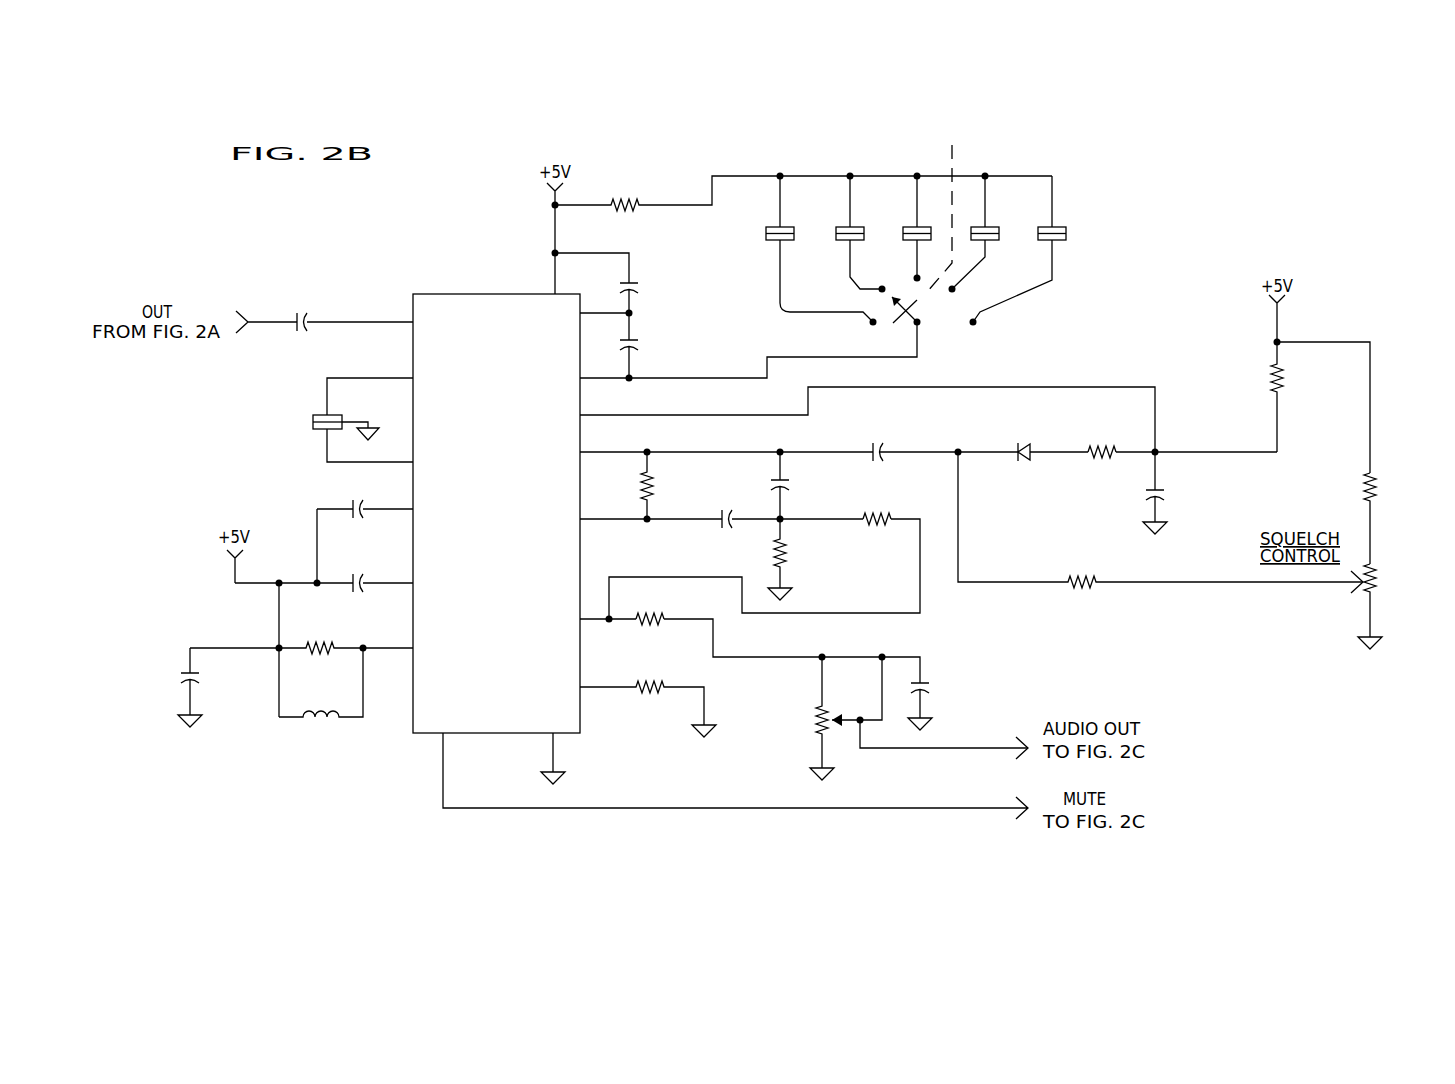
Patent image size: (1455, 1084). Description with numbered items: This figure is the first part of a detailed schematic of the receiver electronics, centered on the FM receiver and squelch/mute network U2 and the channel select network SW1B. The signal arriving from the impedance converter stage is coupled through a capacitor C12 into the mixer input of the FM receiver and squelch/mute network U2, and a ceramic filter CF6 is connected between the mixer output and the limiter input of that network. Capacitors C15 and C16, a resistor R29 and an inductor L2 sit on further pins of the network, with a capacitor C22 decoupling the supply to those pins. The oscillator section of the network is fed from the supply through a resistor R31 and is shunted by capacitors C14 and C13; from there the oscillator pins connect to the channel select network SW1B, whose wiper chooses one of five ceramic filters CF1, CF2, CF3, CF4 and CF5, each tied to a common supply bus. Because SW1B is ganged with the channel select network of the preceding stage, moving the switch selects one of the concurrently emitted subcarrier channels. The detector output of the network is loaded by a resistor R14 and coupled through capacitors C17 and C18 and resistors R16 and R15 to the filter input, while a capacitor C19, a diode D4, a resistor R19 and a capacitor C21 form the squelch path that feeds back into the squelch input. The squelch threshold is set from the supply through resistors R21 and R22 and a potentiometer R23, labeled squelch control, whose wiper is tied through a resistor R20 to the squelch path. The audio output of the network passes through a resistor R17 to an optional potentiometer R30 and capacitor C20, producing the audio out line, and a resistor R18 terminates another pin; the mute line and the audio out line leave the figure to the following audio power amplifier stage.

The FM receiver and squelch/mute network U2 is at (496, 515).
The 0.1 uF coupling capacitor C12 is at (351, 322).
The TOKO HCFM2-455B ceramic filter CF6 is at (301, 420).
The 0.1 uF capacitor C15 is at (365, 507).
The 0.1 uF capacitor C16 is at (324, 581).
The 20K resistor R29 is at (301, 649).
The TOKO 7MC-8128Z inductor L2 is at (323, 704).
The 0.1 uF capacitor C22 is at (208, 687).
The 220 ohm resistor R31 is at (803, 205).
The 0.001 uF capacitor C14 is at (622, 283).
The 0.001 uF capacitor C13 is at (655, 345).
The ceramic filter channel 1 CF1 is at (805, 249).
The ceramic filter channel 2 CF2 is at (844, 232).
The ceramic filter channel 3 CF3 is at (903, 227).
The ceramic filter channel 4 CF4 is at (992, 232).
The ceramic filter channel 5 CF5 is at (1035, 249).
The channel select network SW1B is at (946, 241).
The 470K resistor R14 is at (672, 485).
The 0.1 uF capacitor C19 is at (881, 450).
The 1N5818 diode D4 is at (1026, 452).
The 1K resistor R19 is at (1101, 451).
The 4.7uF/10V capacitor C21 is at (1206, 493).
The 0.001 uF capacitor C17 is at (734, 517).
The 0.001 uF capacitor C18 is at (806, 485).
The 6.8K resistor R16 is at (878, 518).
The 3.3K resistor R15 is at (801, 559).
The 3.3K resistor R17 is at (652, 620).
The 10K resistor R18 is at (648, 696).
The 0.022 uF capacitor C20 is at (950, 697).
The 20K potentiometer (optional) R30 is at (874, 718).
The 100K resistor R21 is at (1302, 397).
The 20K resistor R22 is at (1391, 515).
The 5K potentiometer squelch control R23 is at (1401, 605).
The 5.1K resistor R20 is at (1160, 531).